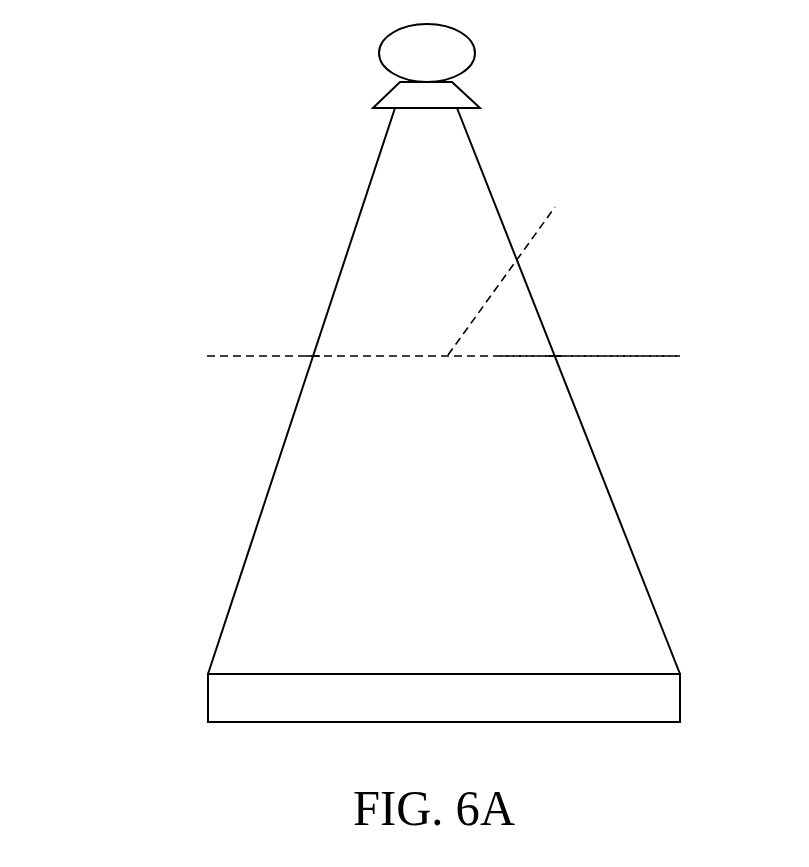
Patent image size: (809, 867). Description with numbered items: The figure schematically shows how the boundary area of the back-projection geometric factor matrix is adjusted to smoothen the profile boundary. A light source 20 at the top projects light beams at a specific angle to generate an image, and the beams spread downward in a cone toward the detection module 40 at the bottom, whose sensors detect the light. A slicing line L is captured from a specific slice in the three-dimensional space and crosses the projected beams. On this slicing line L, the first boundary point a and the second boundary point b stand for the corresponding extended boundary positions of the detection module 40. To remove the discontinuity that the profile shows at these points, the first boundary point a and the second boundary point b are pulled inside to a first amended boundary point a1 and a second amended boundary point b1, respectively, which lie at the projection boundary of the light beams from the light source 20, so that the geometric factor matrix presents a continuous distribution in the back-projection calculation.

The light source 20 is at (475, 55).
The detection module 40 is at (680, 700).
The first boundary point a is at (205, 353).
The first amended boundary point a1 is at (313, 355).
The second boundary point b is at (683, 353).
The second amended boundary point b1 is at (555, 355).
The slicing line L is at (518, 275).